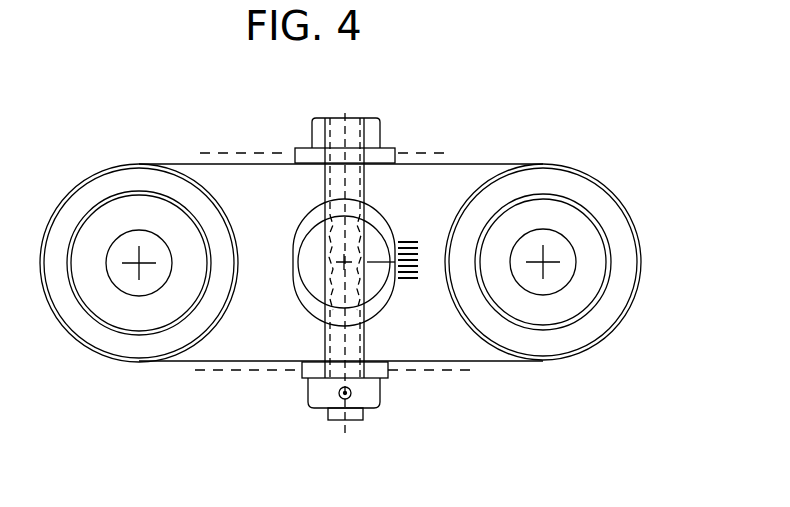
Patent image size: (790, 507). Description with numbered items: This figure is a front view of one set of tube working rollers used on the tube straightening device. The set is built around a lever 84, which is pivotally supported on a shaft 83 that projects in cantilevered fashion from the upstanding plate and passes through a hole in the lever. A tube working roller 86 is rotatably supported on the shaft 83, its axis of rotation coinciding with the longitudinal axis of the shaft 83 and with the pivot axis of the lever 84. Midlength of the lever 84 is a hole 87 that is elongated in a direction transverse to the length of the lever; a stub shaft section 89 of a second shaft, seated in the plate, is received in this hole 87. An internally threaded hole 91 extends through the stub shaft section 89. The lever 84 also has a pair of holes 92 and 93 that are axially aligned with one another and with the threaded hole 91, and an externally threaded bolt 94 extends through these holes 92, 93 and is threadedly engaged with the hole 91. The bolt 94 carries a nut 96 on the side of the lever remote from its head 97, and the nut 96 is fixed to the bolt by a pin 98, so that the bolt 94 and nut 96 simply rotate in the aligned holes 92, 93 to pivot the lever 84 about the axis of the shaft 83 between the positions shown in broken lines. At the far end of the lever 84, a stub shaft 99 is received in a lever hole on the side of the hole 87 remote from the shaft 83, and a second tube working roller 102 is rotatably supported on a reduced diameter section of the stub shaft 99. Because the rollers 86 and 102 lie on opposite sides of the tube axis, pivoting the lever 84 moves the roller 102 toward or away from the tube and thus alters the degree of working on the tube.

The tube working roller 102 is at (112, 185).
The stub shaft 99 is at (122, 280).
The tube working roller 86 is at (622, 240).
The shaft 83 is at (530, 277).
The lever 84 is at (247, 195).
The externally threaded bolt 94 is at (335, 132).
The head 97 is at (370, 132).
The hole 92 is at (363, 162).
The hole 87 is at (379, 208).
The internally threaded hole 91 is at (336, 241).
The stub shaft section 89 is at (310, 265).
The hole 93 is at (352, 343).
The nut 96 is at (370, 393).
The pin 98 is at (330, 398).